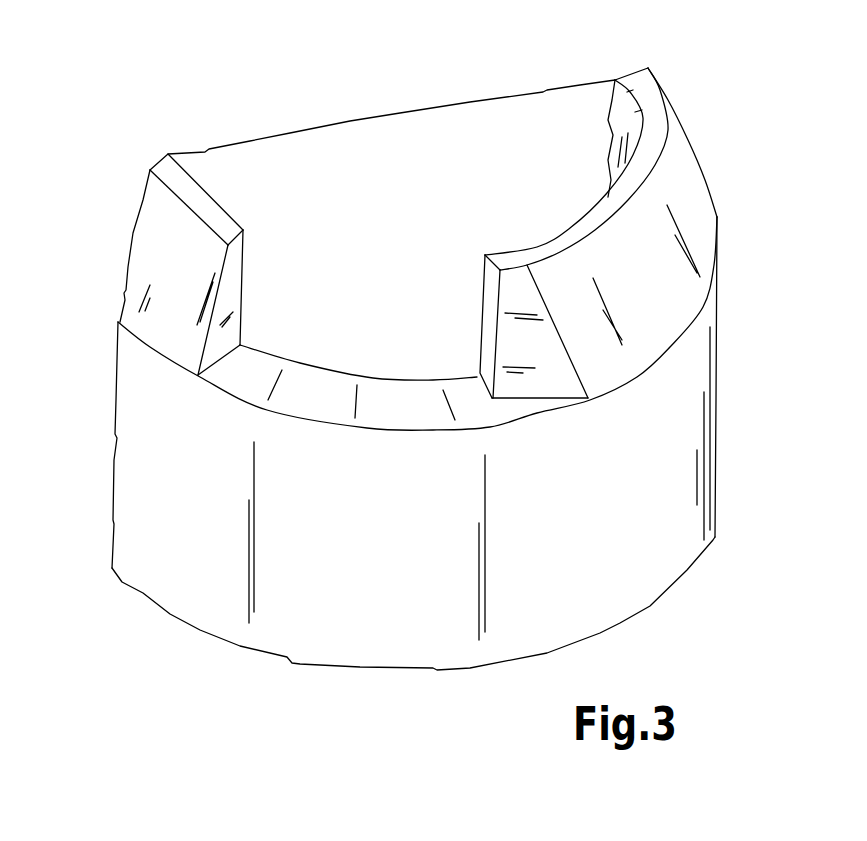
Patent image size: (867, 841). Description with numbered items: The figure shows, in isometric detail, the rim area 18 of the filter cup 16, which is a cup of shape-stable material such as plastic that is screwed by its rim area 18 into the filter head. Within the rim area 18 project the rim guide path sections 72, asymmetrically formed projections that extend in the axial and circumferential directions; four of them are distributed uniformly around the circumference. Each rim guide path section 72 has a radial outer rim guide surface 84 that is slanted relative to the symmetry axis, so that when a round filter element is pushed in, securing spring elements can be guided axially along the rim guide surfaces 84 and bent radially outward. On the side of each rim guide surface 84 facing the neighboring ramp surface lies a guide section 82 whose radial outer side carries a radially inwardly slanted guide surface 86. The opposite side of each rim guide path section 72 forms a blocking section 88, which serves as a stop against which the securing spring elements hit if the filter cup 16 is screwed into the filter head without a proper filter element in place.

The filter cup 16 is at (276, 100).
The rim area 18 is at (104, 327).
The rim guide path section 72 is at (161, 216).
The guide section 82 is at (555, 378).
The rim guide surface 84 is at (150, 268).
The guide surface 86 is at (527, 385).
The blocking section 88 is at (233, 287).